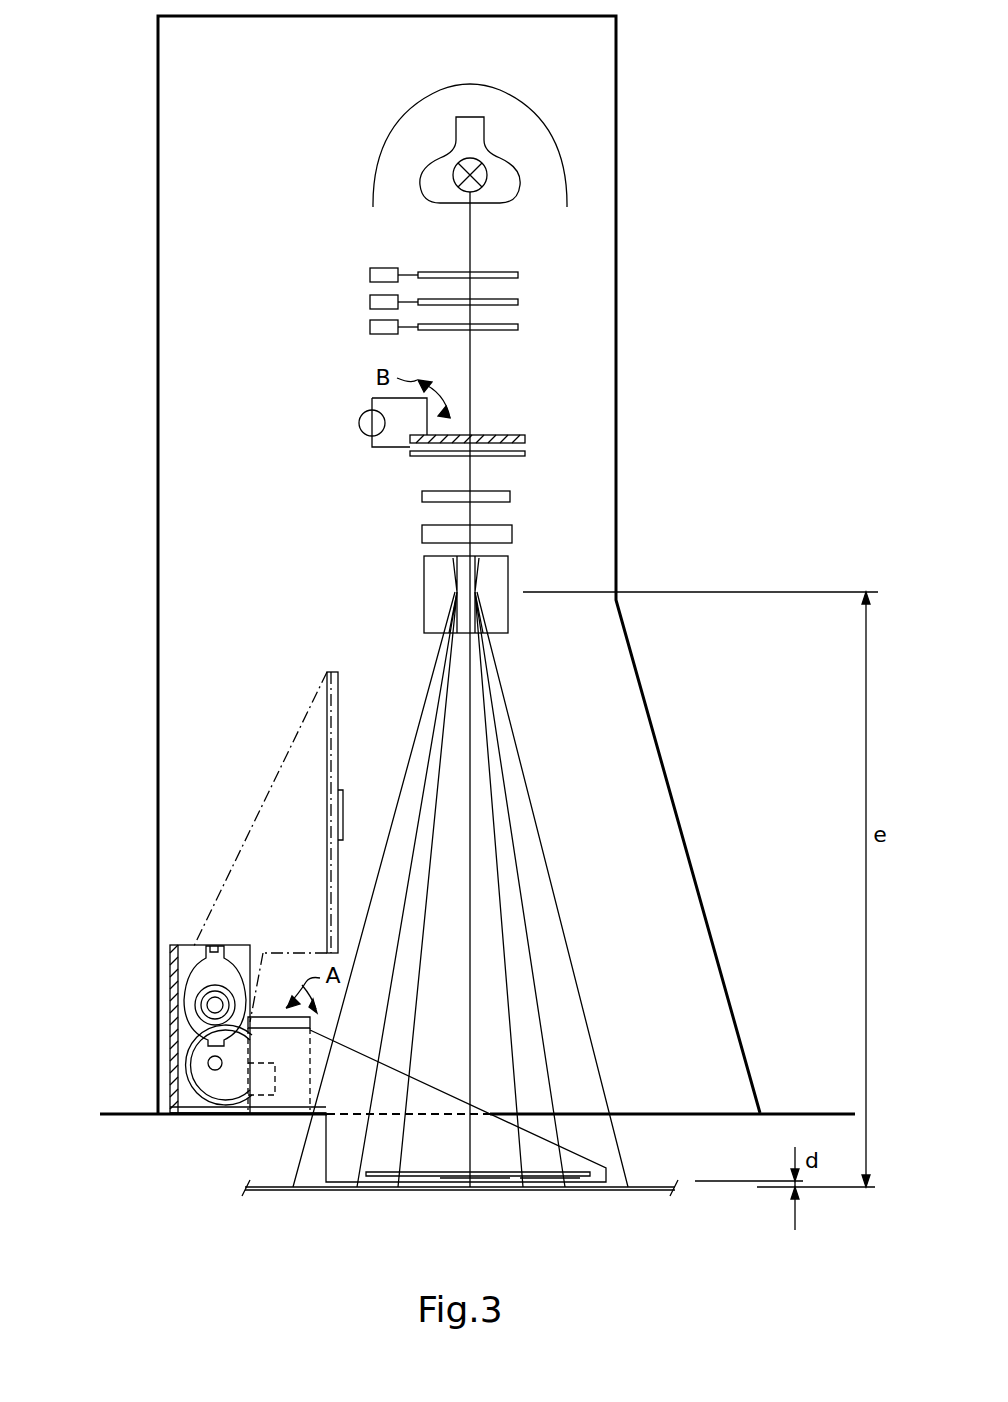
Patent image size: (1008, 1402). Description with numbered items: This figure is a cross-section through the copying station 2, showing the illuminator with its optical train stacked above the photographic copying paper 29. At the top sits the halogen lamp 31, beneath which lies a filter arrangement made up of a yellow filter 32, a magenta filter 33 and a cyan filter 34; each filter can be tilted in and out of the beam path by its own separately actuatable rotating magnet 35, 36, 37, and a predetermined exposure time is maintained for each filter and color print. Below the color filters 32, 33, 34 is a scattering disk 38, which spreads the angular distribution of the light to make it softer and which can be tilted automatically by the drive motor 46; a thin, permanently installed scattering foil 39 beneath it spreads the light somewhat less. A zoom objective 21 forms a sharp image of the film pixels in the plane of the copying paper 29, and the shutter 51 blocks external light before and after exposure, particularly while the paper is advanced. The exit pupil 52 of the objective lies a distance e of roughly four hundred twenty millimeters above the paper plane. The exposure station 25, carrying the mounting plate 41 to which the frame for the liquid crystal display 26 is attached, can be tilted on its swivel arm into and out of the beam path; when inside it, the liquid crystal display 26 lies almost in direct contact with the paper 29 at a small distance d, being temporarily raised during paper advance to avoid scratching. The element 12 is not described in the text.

The copying station 2 is at (125, 338).
The filter plate 12 is at (510, 497).
The zoom objective 21 is at (506, 619).
The exposure station 25 is at (260, 773).
The liquid crystal display 26 is at (537, 1190).
The copying paper 29 is at (419, 1190).
The halogen lamp 31 is at (432, 177).
The yellow filter 32 is at (516, 273).
The magenta filter 33 is at (518, 302).
The cyan filter 34 is at (516, 330).
The rotating magnet 35 is at (378, 268).
The rotating magnet 36 is at (370, 302).
The rotating magnet 37 is at (370, 327).
The scattering disk 38 is at (514, 431).
The scattering foil 39 is at (522, 455).
The mounting plate 41 is at (338, 672).
The drive motor 46 is at (359, 427).
The shutter 51 is at (426, 535).
The exit pupil 52 is at (452, 604).